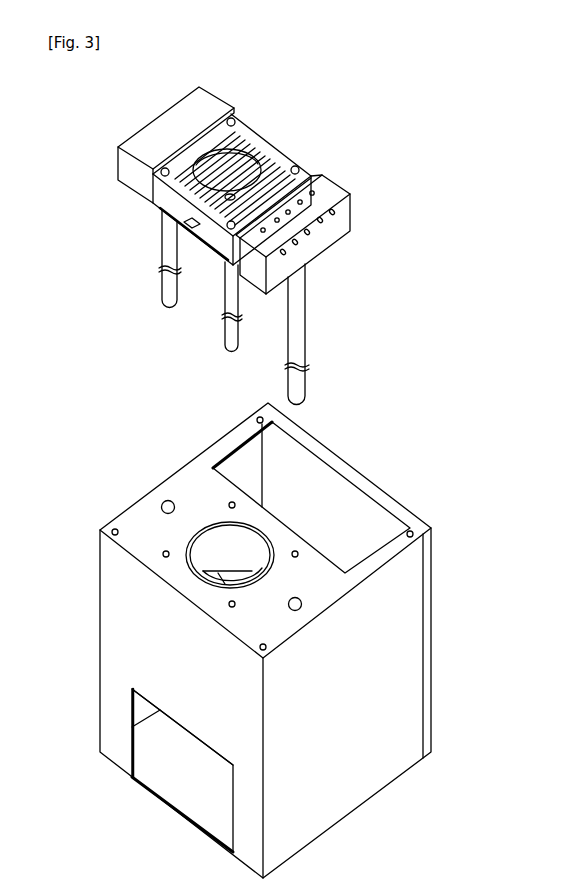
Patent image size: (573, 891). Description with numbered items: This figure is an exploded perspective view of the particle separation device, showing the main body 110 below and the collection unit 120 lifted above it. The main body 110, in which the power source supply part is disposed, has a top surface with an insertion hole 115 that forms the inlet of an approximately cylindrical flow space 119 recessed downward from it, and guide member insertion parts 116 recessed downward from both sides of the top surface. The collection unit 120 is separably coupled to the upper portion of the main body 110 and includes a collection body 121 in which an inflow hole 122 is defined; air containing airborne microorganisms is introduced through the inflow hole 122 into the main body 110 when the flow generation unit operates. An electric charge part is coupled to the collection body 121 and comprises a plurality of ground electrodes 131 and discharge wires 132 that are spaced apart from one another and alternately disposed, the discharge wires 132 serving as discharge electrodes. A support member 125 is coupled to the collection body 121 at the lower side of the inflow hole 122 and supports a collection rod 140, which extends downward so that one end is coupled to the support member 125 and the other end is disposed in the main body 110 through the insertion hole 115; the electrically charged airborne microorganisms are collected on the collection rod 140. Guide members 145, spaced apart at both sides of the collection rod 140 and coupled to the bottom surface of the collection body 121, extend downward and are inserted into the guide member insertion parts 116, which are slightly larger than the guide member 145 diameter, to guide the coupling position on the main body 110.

The main body 110 is at (140, 517).
The insertion hole 115 is at (188, 548).
The guide member insertion part 116 is at (170, 500).
The flow space 119 is at (225, 546).
The collection unit 120 is at (118, 114).
The collection body 121 is at (128, 138).
The inflow hole 122 is at (207, 131).
The support member 125 is at (264, 156).
The ground electrode 131 is at (240, 133).
The discharge wire 132 is at (250, 152).
The collection rod 140 is at (232, 335).
The guide member 145 is at (167, 251).